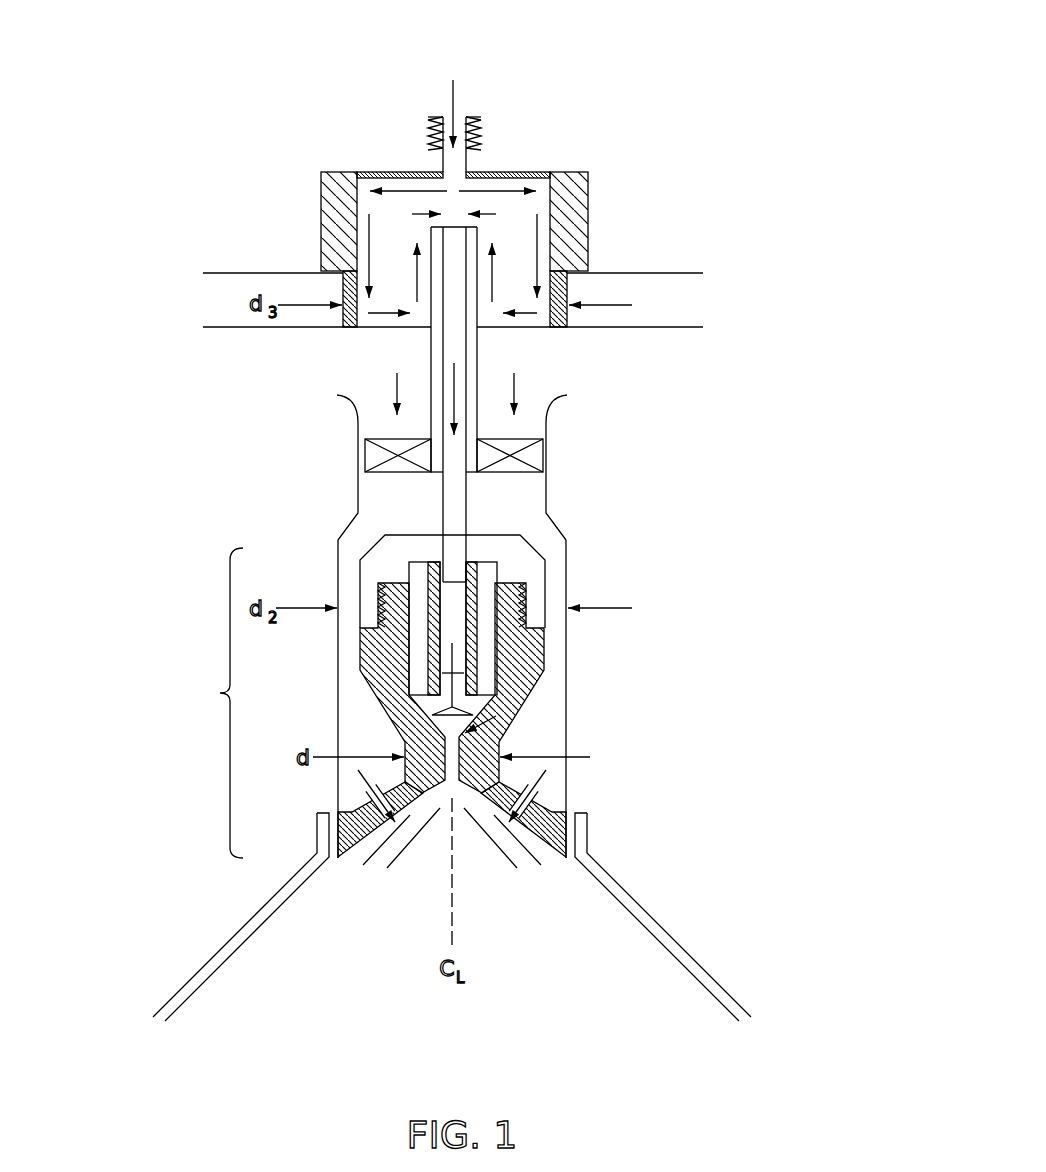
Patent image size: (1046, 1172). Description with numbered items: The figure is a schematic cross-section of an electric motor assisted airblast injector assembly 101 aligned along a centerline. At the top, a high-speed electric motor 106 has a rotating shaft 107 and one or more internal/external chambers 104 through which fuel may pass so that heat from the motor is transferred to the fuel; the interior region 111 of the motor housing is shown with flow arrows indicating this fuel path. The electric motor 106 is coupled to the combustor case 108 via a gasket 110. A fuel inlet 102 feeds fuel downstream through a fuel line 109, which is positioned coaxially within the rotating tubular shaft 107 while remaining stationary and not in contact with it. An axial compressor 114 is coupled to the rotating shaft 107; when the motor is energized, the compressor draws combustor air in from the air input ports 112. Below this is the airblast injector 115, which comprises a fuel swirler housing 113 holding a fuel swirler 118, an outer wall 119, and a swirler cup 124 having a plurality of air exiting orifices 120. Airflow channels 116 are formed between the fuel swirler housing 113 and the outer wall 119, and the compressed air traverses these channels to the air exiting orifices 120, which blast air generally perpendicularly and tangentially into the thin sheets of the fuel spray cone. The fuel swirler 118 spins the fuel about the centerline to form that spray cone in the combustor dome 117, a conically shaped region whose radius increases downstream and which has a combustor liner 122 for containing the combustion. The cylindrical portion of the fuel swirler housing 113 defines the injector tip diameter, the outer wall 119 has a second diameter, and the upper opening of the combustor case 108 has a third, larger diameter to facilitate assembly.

The electric motor assisted airblast injector assembly 101 is at (628, 42).
The fuel inlet 102 is at (447, 103).
The internal/external chambers 104 is at (363, 203).
The high-speed electric motor 106 is at (542, 165).
The rotating shaft 107 is at (478, 345).
The combustor case 108 is at (706, 303).
The fuel line 109 is at (468, 512).
The gasket 110 is at (306, 268).
The chamber 111 is at (524, 245).
The air input ports 112 is at (369, 397).
The fuel swirler housing 113 is at (520, 658).
The axial compressor 114 is at (550, 455).
The airblast injector 115 is at (207, 703).
The airflow channels 116 is at (548, 548).
The combustor dome 117 is at (285, 1002).
The fuel swirler 118 is at (440, 733).
The outer wall 119 is at (568, 590).
The air exiting orifices 120 is at (542, 800).
The combustor liner 122 is at (685, 932).
The swirler cup 124 is at (561, 860).